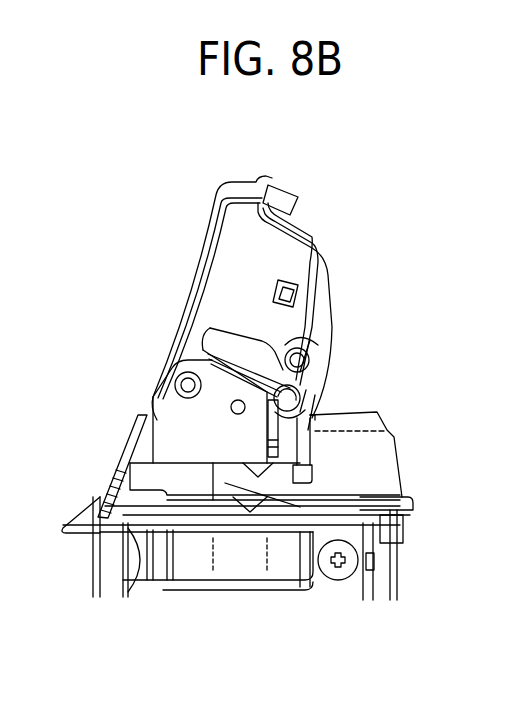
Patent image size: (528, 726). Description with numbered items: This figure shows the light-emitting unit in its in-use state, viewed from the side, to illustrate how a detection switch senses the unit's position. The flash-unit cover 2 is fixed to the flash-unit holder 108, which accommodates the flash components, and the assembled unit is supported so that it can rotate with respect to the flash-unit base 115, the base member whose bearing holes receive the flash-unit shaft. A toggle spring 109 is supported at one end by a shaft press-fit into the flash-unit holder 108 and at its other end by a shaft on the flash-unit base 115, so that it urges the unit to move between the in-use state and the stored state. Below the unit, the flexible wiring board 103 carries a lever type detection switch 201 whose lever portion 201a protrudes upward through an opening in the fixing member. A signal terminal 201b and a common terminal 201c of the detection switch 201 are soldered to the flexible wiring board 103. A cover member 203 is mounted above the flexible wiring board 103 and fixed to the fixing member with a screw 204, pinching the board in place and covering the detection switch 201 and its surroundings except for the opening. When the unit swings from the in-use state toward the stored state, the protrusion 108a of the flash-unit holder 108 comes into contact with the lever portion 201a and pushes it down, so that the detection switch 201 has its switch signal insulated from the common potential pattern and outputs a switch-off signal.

The flash-unit cover 2 is at (295, 250).
The flash-unit holder 108 is at (320, 320).
The toggle spring 109 is at (318, 372).
The protrusion 108a is at (315, 412).
The flash-unit base 115 is at (147, 426).
The detection switch 201 is at (240, 550).
The lever portion 201a is at (267, 497).
The signal terminal 201b is at (267, 540).
The common terminal 201c is at (213, 545).
The cover member 203 is at (183, 600).
The screw 204 is at (376, 567).
The flexible wiring board 103 is at (335, 584).